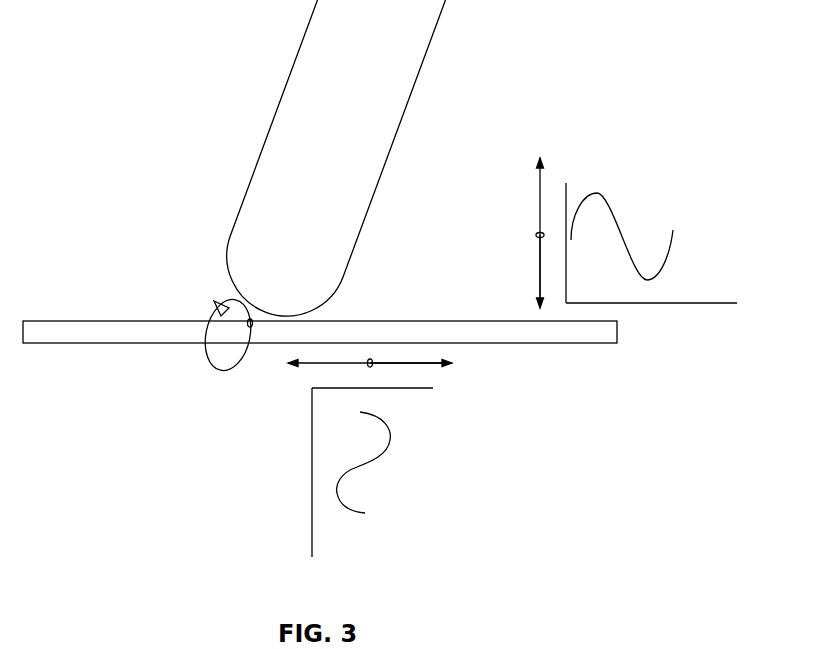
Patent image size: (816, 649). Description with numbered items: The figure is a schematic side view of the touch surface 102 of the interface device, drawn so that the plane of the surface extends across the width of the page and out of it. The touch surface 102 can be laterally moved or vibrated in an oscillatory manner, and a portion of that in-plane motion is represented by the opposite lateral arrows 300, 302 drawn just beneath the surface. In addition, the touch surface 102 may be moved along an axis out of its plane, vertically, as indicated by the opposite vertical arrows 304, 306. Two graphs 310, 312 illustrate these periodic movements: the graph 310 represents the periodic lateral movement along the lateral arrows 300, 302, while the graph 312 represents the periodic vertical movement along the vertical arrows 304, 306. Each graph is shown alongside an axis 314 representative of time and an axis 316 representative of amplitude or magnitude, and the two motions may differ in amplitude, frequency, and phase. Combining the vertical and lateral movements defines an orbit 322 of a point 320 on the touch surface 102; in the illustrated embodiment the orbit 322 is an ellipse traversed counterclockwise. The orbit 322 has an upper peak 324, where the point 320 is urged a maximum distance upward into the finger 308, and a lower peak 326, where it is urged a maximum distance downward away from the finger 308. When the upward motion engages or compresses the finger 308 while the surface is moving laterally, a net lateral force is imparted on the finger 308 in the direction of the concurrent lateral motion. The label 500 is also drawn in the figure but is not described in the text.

The touch surface 102 is at (565, 343).
The lateral arrow 300 is at (318, 363).
The lateral arrow 302 is at (423, 365).
The vertical arrow 304 is at (540, 212).
The vertical arrow 306 is at (540, 258).
The finger 308 is at (402, 115).
The graph 310 is at (407, 458).
The graph 312 is at (708, 218).
The axis 314 is at (713, 303).
The axis 316 is at (566, 183).
The point 320 is at (252, 328).
The orbit 322 is at (202, 348).
The upper peak 324 is at (232, 298).
The lower peak 326 is at (217, 372).
The haptic stylus system 500 is at (675, 628).